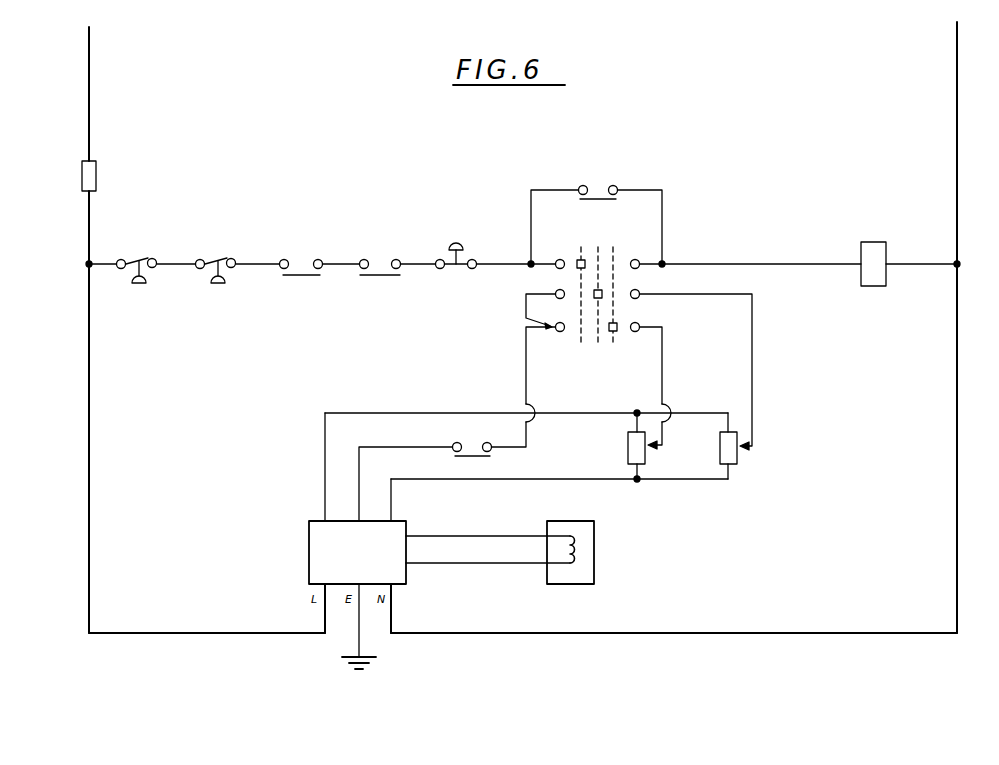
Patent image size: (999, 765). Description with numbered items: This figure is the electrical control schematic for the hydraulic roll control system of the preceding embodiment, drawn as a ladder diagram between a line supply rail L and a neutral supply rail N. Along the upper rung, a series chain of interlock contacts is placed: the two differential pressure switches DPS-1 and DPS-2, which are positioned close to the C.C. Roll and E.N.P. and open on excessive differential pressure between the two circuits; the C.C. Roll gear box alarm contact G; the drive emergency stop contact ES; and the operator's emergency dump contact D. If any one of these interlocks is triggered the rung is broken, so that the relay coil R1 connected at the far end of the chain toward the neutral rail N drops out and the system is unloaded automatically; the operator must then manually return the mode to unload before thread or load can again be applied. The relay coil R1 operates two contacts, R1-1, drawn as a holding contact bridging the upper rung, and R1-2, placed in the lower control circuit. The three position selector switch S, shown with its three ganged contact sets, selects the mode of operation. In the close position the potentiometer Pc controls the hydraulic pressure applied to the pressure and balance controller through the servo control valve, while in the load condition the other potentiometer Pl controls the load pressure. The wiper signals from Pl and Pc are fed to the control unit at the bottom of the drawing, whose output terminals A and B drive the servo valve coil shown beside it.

The line supply rail L is at (188, 330).
The neutral supply rail N is at (690, 327).
The differential pressure switch DPS-1 is at (137, 259).
The differential pressure switch DPS-2 is at (213, 259).
The C.C. Roll gear box alarm G is at (301, 252).
The drive emergency stop ES is at (380, 251).
The emergency dump D is at (456, 244).
The relay R1 contact 1 R1-1 is at (596, 216).
The three position selector switch S is at (612, 238).
The relay coil R1 is at (873, 254).
The relay R1 contact 2 R1-2 is at (425, 473).
The potentiometer Pl is at (653, 467).
The potentiometer Pc is at (742, 452).
The terminal A is at (488, 529).
The terminal B is at (488, 556).